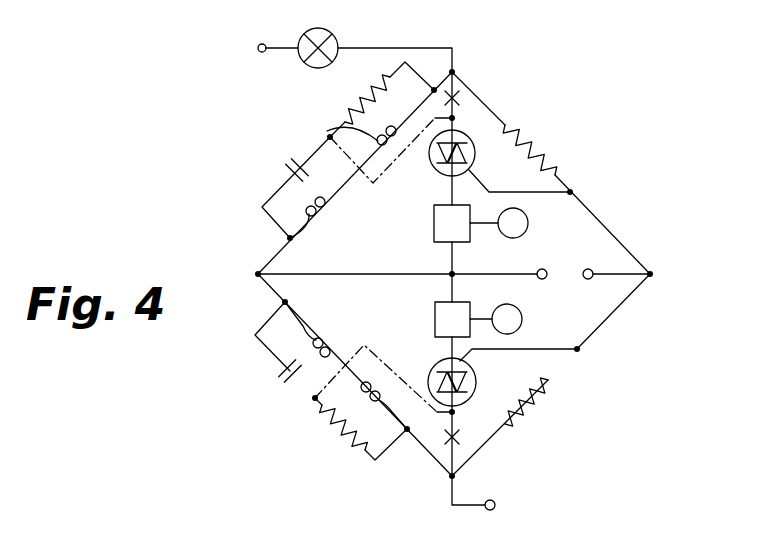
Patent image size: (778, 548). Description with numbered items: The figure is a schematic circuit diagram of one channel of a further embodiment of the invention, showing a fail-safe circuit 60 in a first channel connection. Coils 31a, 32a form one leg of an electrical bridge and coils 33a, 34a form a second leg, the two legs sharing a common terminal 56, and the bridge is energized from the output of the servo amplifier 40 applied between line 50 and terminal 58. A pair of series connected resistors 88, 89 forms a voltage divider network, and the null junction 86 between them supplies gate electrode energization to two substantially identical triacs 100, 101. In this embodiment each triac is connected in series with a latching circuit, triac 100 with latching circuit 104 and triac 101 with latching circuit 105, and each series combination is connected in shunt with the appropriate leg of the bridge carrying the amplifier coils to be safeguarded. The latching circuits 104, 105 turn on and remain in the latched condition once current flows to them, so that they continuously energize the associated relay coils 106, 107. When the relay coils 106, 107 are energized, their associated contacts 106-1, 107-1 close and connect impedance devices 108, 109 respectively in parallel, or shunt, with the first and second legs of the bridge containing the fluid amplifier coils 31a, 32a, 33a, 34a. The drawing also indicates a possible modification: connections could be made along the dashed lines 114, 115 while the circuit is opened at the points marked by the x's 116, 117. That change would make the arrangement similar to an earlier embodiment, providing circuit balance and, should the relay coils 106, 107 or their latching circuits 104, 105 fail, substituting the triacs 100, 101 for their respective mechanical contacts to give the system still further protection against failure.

The servo amplifier 40 is at (334, 36).
The line 50 is at (433, 47).
The common terminal 56 is at (352, 273).
The terminal 58 is at (496, 505).
The fail-safe circuit 60 is at (593, 203).
The null junction 86 is at (594, 270).
The resistor 88 is at (528, 142).
The resistor 89 is at (535, 396).
The triac 100 is at (468, 132).
The triac 101 is at (468, 398).
The latching circuit 104 is at (434, 230).
The latching circuit 105 is at (435, 313).
The relay coil 106 is at (528, 226).
The relay coil 107 is at (522, 320).
The contacts 106-1 is at (285, 167).
The contacts 107-1 is at (278, 373).
The impedance device 108 is at (365, 97).
The impedance device 109 is at (337, 433).
The dashed line 114 is at (401, 161).
The dashed line 115 is at (363, 344).
The x 116 is at (459, 96).
The x 117 is at (460, 443).
The coil 31a is at (327, 131).
The coil 32a is at (298, 218).
The coil 33a is at (296, 337).
The coil 34a is at (382, 413).